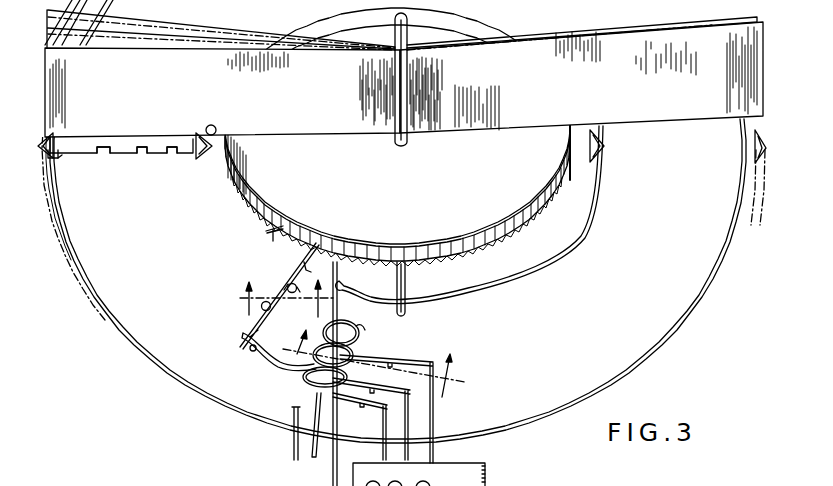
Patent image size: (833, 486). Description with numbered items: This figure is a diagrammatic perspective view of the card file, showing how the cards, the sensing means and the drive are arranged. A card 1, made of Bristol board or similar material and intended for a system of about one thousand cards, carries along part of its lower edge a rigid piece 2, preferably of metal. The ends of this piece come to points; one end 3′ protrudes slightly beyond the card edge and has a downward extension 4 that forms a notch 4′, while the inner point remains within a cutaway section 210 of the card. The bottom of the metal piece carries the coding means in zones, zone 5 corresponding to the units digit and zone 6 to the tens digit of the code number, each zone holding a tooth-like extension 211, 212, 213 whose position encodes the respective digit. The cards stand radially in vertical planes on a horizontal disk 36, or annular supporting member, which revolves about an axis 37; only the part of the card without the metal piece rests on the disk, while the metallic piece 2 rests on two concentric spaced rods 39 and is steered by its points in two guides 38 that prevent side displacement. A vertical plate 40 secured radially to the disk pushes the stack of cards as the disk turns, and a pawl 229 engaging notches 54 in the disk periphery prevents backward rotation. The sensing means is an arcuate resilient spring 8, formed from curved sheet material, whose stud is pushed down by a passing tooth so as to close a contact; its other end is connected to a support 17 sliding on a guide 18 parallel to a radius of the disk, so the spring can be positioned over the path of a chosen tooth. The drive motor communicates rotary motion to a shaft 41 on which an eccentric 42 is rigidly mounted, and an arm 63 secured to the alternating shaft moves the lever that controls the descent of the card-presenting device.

The card 1 is at (52, 69).
The rigid piece 2 is at (138, 135).
The end of rigid piece 3′ is at (50, 133).
The extension 4 is at (45, 158).
The notch 4′ is at (59, 158).
The zone 5 is at (374, 355).
The zone 6 is at (279, 288).
The spring 8 is at (346, 327).
The support 17 is at (356, 355).
The guide 18 is at (309, 437).
The disk 36 is at (572, 163).
The axis 37 is at (406, 287).
The guides 38 is at (38, 147).
The rods 39 is at (572, 242).
The vertical plate 40 is at (581, 77).
The shaft 41 is at (298, 263).
The eccentric 42 is at (287, 288).
The notches 54 is at (275, 212).
The arm 63 is at (250, 349).
The cutaway section 210 is at (216, 128).
The tooth-like extension 211 is at (173, 155).
The tooth-like extension 212 is at (143, 155).
The tooth-like extension 213 is at (107, 155).
The pawl 229 is at (266, 231).